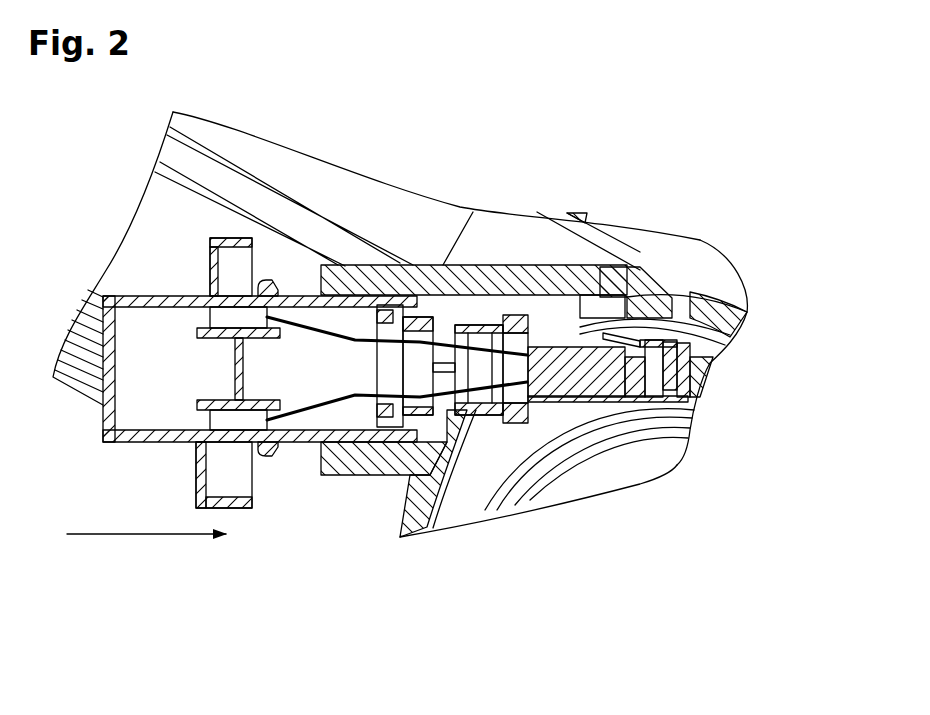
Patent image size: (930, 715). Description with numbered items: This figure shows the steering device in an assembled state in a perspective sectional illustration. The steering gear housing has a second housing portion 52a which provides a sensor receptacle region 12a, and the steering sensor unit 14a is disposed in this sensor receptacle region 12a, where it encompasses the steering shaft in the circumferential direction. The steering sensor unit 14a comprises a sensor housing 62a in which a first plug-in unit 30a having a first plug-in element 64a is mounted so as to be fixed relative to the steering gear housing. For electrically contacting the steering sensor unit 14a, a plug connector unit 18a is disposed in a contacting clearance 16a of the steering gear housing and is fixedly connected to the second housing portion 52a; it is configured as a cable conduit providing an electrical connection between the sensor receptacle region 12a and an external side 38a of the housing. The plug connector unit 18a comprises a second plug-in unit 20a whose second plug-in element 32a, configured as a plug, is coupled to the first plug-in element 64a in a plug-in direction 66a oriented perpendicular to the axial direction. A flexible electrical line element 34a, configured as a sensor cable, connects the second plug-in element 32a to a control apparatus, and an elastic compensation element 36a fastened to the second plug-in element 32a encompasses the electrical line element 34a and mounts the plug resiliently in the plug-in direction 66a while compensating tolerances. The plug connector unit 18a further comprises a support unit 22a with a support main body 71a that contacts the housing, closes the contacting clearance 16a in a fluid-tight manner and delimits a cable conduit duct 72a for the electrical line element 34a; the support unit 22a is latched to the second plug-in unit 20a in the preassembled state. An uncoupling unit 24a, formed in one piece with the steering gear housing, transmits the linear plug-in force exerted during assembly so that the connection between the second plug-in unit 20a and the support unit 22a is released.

The sensor receptacle region 12a is at (472, 480).
The steering sensor unit 14a is at (652, 465).
The contacting clearance 16a is at (307, 279).
The plug connector unit 18a is at (277, 480).
The second plug-in unit 20a is at (589, 318).
The support unit 22a is at (145, 290).
The uncoupling unit 24a is at (350, 446).
The first plug-in unit 30a is at (661, 331).
The second plug-in element 32a is at (592, 395).
The electrical line element 34a is at (482, 343).
The compensation element 36a is at (517, 313).
The external side 38a is at (273, 485).
The second housing portion 52a is at (738, 266).
The sensor housing 62a is at (520, 483).
The first plug-in element 64a is at (690, 350).
The plug-in direction 66a is at (100, 535).
The support main body 71a is at (200, 490).
The cable conduit duct 72a is at (302, 322).